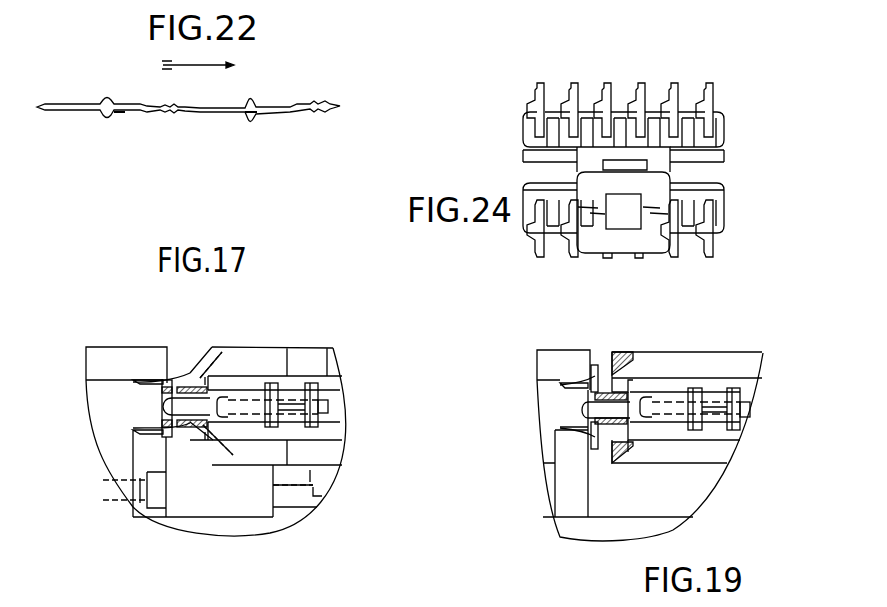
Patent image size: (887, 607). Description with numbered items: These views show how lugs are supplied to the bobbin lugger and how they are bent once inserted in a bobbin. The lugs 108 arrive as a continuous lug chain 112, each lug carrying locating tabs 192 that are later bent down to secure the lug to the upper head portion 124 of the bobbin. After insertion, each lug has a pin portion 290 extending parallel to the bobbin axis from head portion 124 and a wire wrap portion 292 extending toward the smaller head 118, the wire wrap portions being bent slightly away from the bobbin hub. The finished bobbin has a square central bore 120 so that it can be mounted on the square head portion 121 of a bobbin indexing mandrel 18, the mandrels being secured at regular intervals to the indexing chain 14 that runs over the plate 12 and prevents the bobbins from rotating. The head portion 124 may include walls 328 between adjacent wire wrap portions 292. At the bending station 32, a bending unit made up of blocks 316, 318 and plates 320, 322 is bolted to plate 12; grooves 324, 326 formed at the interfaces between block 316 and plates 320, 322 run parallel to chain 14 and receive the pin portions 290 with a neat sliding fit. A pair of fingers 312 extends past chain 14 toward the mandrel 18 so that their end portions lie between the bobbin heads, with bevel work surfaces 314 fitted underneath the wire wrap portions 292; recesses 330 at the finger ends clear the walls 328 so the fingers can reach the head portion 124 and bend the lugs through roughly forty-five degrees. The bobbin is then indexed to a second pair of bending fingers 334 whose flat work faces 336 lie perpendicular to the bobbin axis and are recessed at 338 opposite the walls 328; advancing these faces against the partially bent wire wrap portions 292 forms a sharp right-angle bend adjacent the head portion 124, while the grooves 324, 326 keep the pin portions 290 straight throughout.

In FIG. 17, the plate 12 is at (280, 523).
In FIG. 17, the indexing chain 14 is at (320, 383).
In FIG. 17, the bobbin indexing mandrel 18 is at (253, 387).
In FIG. 17, the bending station 32 is at (76, 370).
In FIG. 22, the metal lug 108 is at (58, 103).
In FIG. 22, the lug chain 112 is at (227, 130).
In FIG. 24, the smaller head 118 is at (663, 248).
In FIG. 24, the square central bore 120 is at (630, 227).
In FIG. 19, the square head portion 121 is at (620, 403).
In FIG. 24, the upper head portion 124 is at (525, 146).
In FIG. 22, the locating tab 192 is at (125, 117).
In FIG. 24, the pin portion 290 is at (568, 0).
In FIG. 17, the pin portion 290 is at (148, 397).
In FIG. 19, the pin portion 290 is at (560, 408).
In FIG. 22, the wire wrap portion 292 is at (157, 98).
In FIG. 17, the wire wrap portion 292 is at (187, 377).
In FIG. 19, the wire wrap portion 292 is at (593, 370).
In FIG. 17, the finger 312 is at (310, 355).
In FIG. 17, the bevel work surface 314 is at (205, 377).
In FIG. 17, the block 316 is at (88, 398).
In FIG. 17, the block 318 is at (115, 473).
In FIG. 17, the plate 320 is at (140, 513).
In FIG. 17, the plate 322 is at (107, 355).
In FIG. 17, the groove 324 is at (133, 430).
In FIG. 19, the groove 324 is at (553, 428).
In FIG. 17, the groove 326 is at (138, 383).
In FIG. 19, the groove 326 is at (560, 385).
In FIG. 24, the wall 328 is at (683, 112).
In FIG. 17, the recess 330 is at (197, 377).
In FIG. 19, the bending finger 334 is at (757, 385).
In FIG. 19, the flat work face 336 is at (598, 365).
In FIG. 19, the recess 338 is at (617, 348).